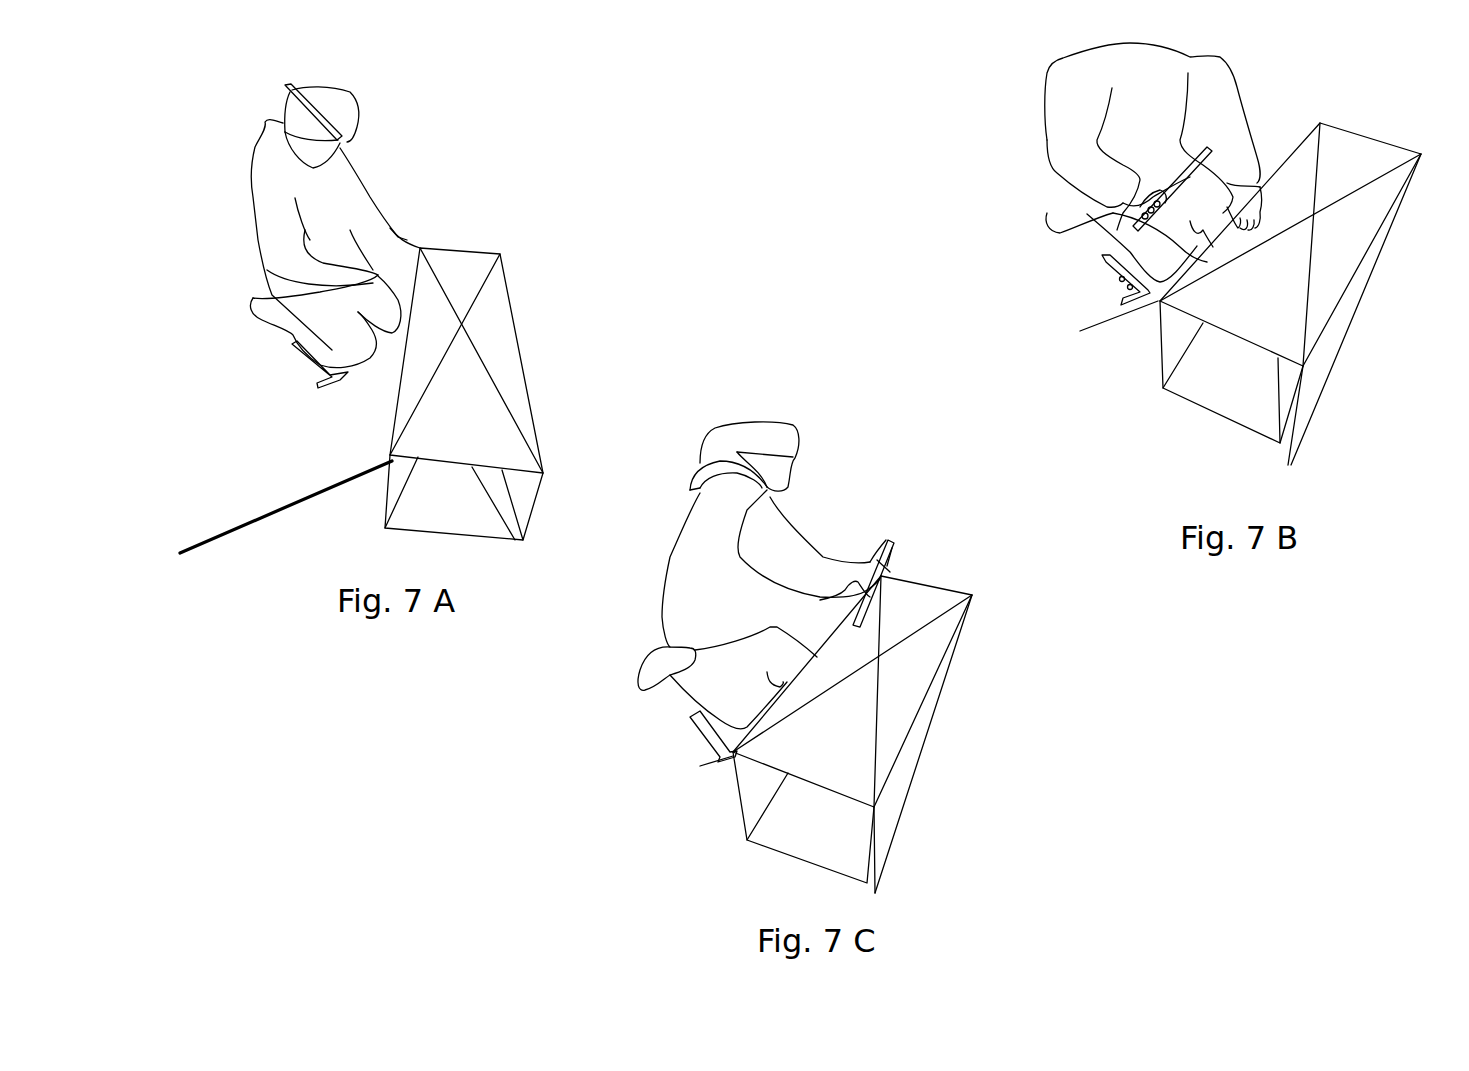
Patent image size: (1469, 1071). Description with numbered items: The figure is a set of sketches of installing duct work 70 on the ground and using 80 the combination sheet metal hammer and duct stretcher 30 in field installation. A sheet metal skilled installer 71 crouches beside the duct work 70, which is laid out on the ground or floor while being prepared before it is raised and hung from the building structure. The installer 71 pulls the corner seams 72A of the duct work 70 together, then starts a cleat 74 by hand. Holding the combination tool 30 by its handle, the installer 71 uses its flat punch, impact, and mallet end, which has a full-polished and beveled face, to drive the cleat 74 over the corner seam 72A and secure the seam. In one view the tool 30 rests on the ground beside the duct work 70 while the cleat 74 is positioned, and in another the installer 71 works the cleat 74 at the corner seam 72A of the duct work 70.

In FIG. 7A, the duct work 70 is at (480, 386).
In FIG. 7B, the duct work 70 is at (1279, 289).
In FIG. 7C, the duct work 70 is at (897, 683).
In FIG. 7A, the sheet metal skilled installer 71 is at (277, 239).
In FIG. 7B, the sheet metal skilled installer 71 is at (1090, 134).
In FIG. 7C, the sheet metal skilled installer 71 is at (750, 510).
In FIG. 7A, the corner seam 72A is at (268, 522).
In FIG. 7B, the corner seam 72A is at (1080, 331).
In FIG. 7C, the corner seam 72A is at (733, 756).
In FIG. 7B, the cleat 74 is at (1210, 148).
In FIG. 7C, the cleat 74 is at (890, 586).
In FIG. 7B, the combination sheet metal hammer and duct stretcher 30 is at (1102, 276).
In FIG. 7C, the combination sheet metal hammer and duct stretcher 30 is at (893, 559).
In FIG. 7A, the using combination sheet metal hammer and duct stretcher device in field installi 80 is at (275, 585).
In FIG. 7B, the using combination sheet metal hammer and duct stretcher device in field installi 80 is at (1348, 461).
In FIG. 7C, the using combination sheet metal hammer and duct stretcher device in field installi 80 is at (689, 839).